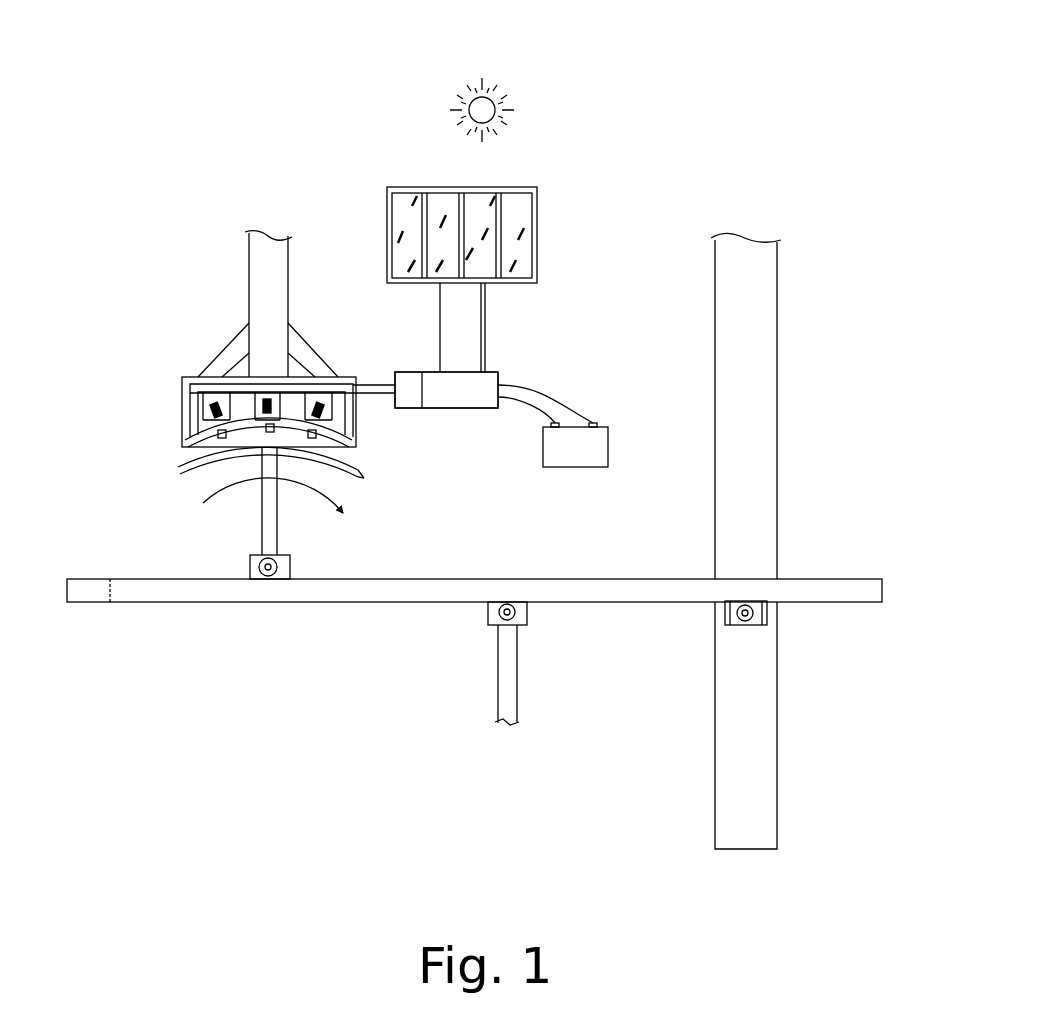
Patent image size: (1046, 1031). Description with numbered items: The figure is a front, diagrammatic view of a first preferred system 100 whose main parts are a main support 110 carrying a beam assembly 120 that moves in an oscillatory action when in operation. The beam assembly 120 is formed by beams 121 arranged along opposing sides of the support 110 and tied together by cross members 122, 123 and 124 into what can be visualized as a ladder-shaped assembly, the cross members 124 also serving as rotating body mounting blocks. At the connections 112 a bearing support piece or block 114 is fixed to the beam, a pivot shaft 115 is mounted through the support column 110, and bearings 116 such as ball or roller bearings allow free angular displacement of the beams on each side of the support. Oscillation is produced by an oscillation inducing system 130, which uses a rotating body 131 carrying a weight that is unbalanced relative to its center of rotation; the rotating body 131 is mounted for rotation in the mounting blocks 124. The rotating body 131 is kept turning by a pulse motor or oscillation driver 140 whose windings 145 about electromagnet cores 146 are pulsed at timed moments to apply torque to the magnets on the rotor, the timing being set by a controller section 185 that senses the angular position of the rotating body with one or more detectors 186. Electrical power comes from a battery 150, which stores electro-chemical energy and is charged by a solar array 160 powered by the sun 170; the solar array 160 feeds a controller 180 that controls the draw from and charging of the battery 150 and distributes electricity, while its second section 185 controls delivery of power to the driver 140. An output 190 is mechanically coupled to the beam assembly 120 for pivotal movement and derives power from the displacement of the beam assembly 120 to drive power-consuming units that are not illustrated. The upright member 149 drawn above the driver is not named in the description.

The system 100 is at (740, 75).
The main support 110 is at (715, 312).
The connection 112 is at (787, 572).
The bearing support piece or block 114 is at (725, 617).
The pivot shaft 115 is at (767, 613).
The bearing 116 is at (763, 620).
The beam assembly 120 is at (472, 601).
The beam 121 is at (197, 605).
The cross member 122 is at (87, 605).
The cross member 123 is at (527, 613).
The rotating body mounting block 124 is at (247, 563).
The oscillation inducing system 130 is at (253, 501).
The rotating body 131 is at (360, 473).
The oscillation driver 140 is at (254, 399).
The winding 145 is at (356, 438).
The electromagnet core 146 is at (207, 402).
The upper pole 149 is at (250, 300).
The battery 150 is at (620, 417).
The solar array 160 is at (553, 173).
The sun 170 is at (460, 72).
The controller 180 is at (470, 408).
The second section of controller 185 is at (410, 372).
The detector 186 is at (187, 438).
The output 190 is at (540, 687).